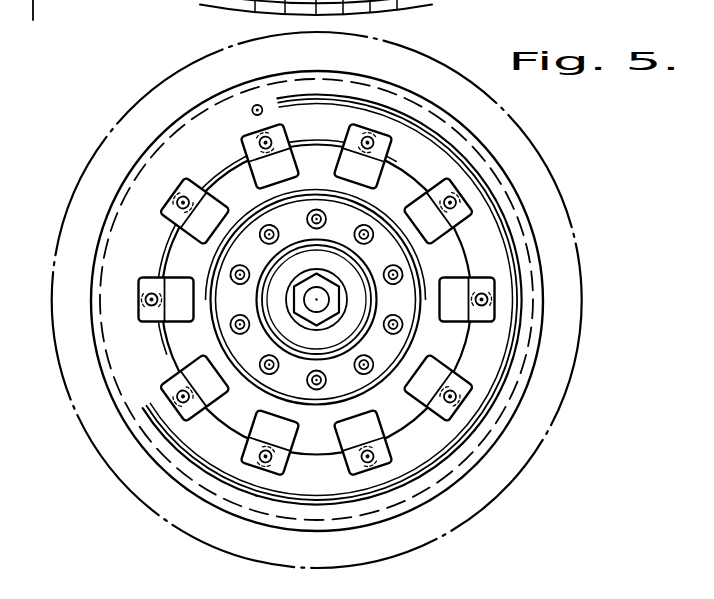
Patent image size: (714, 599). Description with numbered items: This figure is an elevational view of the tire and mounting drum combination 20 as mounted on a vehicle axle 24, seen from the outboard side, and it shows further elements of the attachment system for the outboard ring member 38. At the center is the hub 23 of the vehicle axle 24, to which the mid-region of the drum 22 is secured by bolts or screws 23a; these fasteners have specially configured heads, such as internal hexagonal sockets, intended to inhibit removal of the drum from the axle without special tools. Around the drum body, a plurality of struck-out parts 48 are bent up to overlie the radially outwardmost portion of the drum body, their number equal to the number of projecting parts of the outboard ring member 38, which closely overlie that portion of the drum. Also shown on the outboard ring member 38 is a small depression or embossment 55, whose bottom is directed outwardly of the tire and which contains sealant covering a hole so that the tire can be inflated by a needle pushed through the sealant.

The tire and mounting drum combination 20 is at (570, 217).
The drum 22 is at (243, 448).
The hub 23 is at (334, 349).
The bolts or screws 23a is at (403, 326).
The vehicle axle 24 is at (311, 305).
The outboard ring member 38 is at (107, 400).
The struck-out parts 48 is at (285, 137).
The depression or embossment 55 is at (259, 105).